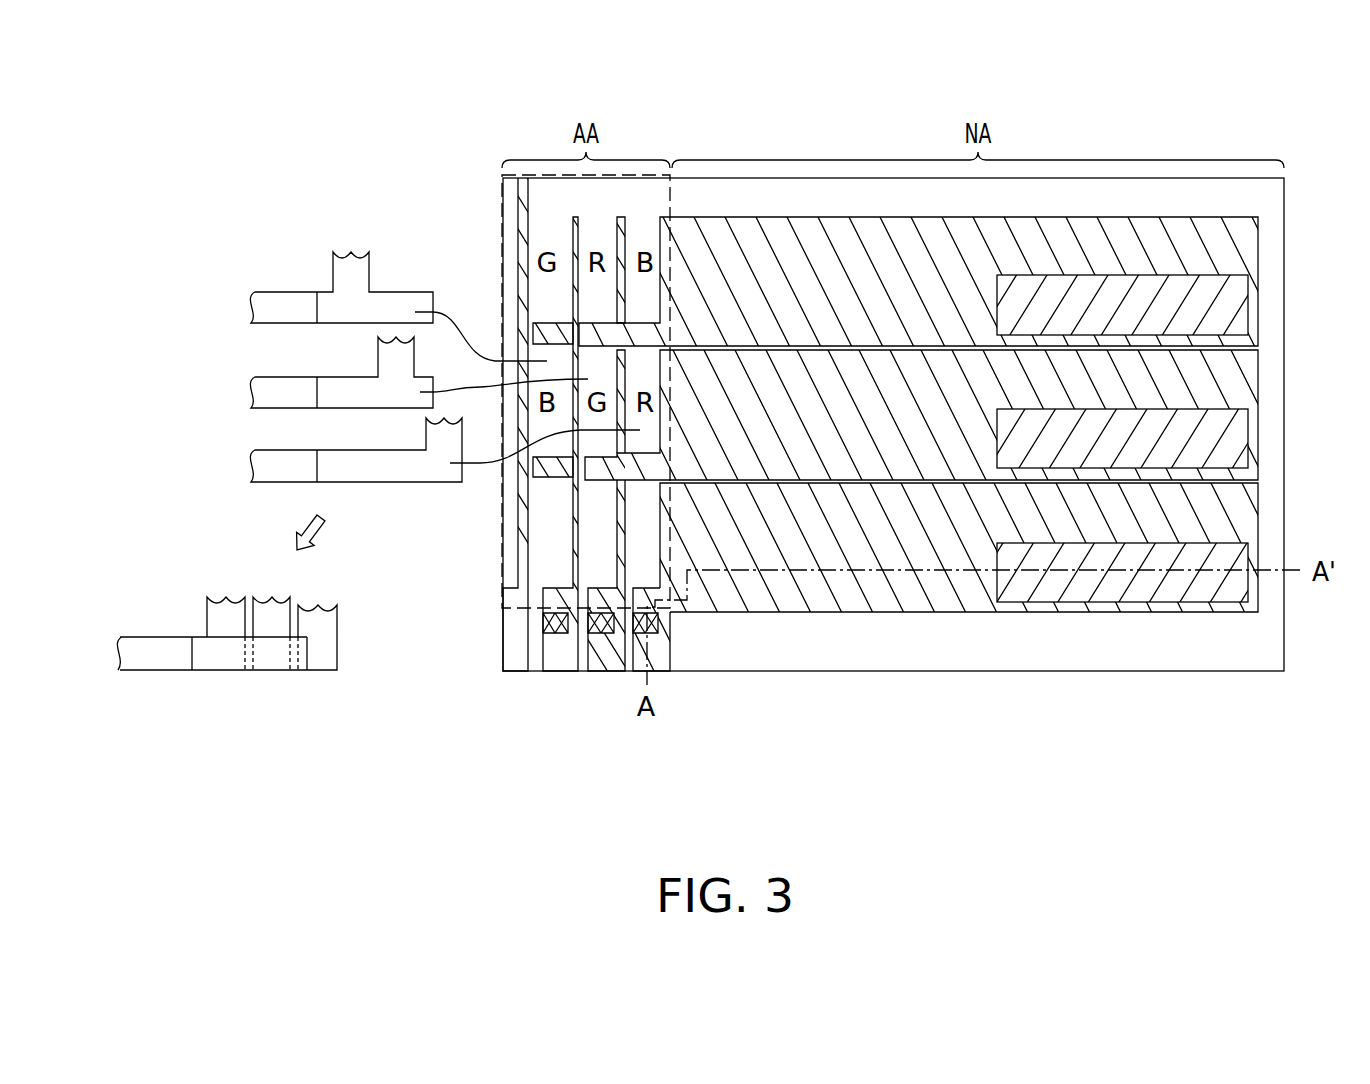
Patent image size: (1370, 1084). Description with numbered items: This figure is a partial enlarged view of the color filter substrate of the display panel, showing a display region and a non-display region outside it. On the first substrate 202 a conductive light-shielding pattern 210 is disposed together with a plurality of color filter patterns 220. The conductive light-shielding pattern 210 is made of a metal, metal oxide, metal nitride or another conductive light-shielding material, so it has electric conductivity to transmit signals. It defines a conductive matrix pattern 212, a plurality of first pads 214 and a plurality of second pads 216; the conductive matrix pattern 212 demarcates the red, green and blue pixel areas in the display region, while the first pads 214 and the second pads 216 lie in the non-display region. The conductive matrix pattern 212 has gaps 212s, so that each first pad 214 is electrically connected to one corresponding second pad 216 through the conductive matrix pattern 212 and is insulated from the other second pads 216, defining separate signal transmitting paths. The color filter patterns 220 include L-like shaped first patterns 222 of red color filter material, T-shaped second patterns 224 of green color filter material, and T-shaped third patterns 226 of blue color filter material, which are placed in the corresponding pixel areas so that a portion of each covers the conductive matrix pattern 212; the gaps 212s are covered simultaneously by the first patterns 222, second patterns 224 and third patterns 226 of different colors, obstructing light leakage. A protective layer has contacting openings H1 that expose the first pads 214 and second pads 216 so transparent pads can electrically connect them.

The first substrate 202 is at (1210, 655).
The conductive light-shielding pattern 210 is at (678, 735).
The conductive matrix pattern 212 is at (690, 587).
The gaps 212s is at (583, 490).
The first pads 214 is at (655, 650).
The second pads 216 is at (1247, 241).
The color filter patterns 220 is at (140, 330).
The first patterns 222 is at (268, 468).
The second patterns 224 is at (262, 398).
The third patterns 226 is at (255, 318).
The contacting openings H1 is at (1226, 445).